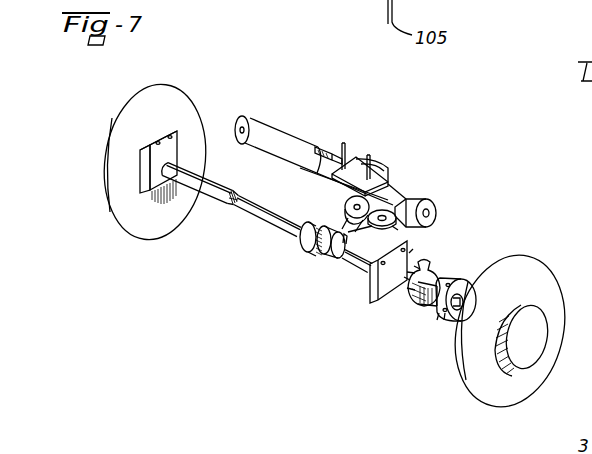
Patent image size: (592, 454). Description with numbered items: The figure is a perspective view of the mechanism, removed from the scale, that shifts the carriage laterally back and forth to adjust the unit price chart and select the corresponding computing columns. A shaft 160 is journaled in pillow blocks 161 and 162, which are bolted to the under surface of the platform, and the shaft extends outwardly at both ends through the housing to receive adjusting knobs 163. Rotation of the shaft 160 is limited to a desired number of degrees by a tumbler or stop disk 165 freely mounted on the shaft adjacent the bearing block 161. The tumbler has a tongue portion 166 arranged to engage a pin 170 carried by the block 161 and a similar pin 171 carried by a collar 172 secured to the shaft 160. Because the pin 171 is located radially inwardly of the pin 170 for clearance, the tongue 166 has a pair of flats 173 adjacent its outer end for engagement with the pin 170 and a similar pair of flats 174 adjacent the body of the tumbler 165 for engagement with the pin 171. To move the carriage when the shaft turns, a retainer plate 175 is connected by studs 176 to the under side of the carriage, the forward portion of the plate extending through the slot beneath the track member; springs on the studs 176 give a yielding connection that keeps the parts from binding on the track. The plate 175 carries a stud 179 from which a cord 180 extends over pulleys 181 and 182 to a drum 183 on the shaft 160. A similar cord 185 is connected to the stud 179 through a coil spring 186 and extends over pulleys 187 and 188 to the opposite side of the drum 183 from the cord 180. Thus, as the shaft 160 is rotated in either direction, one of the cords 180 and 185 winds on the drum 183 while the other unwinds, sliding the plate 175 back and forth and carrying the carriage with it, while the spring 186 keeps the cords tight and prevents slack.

The shaft 160 is at (248, 209).
The pillow block 161 is at (373, 303).
The pillow block 162 is at (142, 168).
The adjusting knob 163 is at (137, 121).
The tumbler or stop disk 165 is at (417, 308).
The tongue portion 166 is at (428, 263).
The pin 170 is at (413, 250).
The pin 171 is at (441, 313).
The collar 172 is at (485, 295).
The flats 173 is at (416, 268).
The flats 174 is at (405, 278).
The retainer plate 175 is at (385, 170).
The studs 176 is at (369, 155).
The stud 179 is at (325, 181).
The cord 180 is at (393, 196).
The pulley 181 is at (437, 205).
The pulley 182 is at (405, 205).
The drum 183 is at (307, 252).
The cord 185 is at (272, 128).
The coil spring 186 is at (318, 145).
The pulley 187 is at (240, 118).
The pulley 188 is at (344, 206).